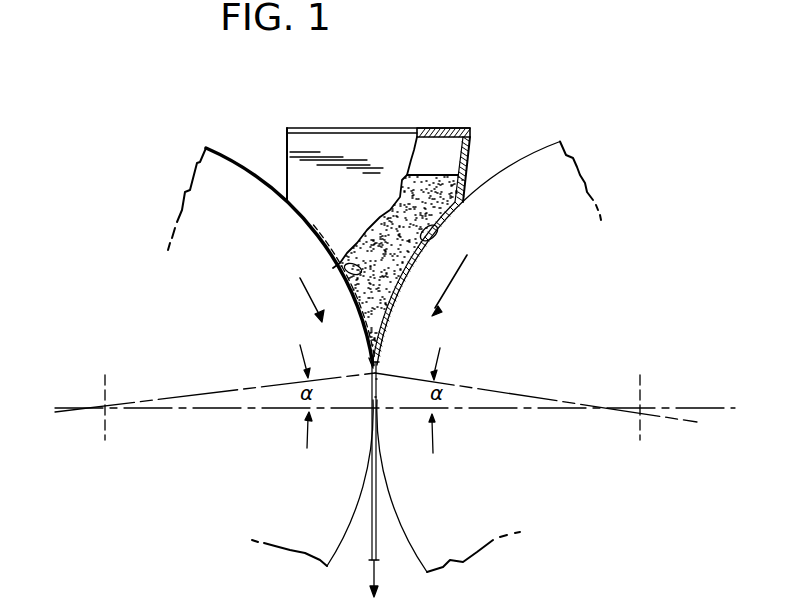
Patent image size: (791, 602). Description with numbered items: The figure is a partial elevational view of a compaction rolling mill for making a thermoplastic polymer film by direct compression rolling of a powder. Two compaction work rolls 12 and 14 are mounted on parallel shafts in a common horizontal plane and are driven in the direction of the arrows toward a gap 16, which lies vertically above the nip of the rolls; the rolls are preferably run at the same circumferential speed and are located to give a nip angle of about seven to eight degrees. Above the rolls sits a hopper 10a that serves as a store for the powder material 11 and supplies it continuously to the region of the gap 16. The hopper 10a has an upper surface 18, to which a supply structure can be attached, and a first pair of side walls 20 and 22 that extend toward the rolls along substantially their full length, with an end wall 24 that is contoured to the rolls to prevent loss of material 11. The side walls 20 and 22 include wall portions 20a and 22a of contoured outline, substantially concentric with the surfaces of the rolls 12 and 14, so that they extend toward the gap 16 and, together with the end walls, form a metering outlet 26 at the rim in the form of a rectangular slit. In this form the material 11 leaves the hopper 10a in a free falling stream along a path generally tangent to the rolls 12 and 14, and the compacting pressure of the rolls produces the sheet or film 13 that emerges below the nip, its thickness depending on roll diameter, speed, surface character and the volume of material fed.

The hopper 10a is at (370, 124).
The material 11 is at (395, 254).
The compaction work roll 12 is at (509, 174).
The sheet or film 13 is at (378, 516).
The compaction work roll 14 is at (254, 181).
The gap 16 is at (372, 365).
The upper surface 18 is at (440, 130).
The side wall 20 is at (468, 163).
The wall portion 20a is at (440, 231).
The side wall 22 is at (287, 158).
The wall portion 22a is at (344, 269).
The end wall 24 is at (351, 198).
The metering outlet 26 is at (379, 360).